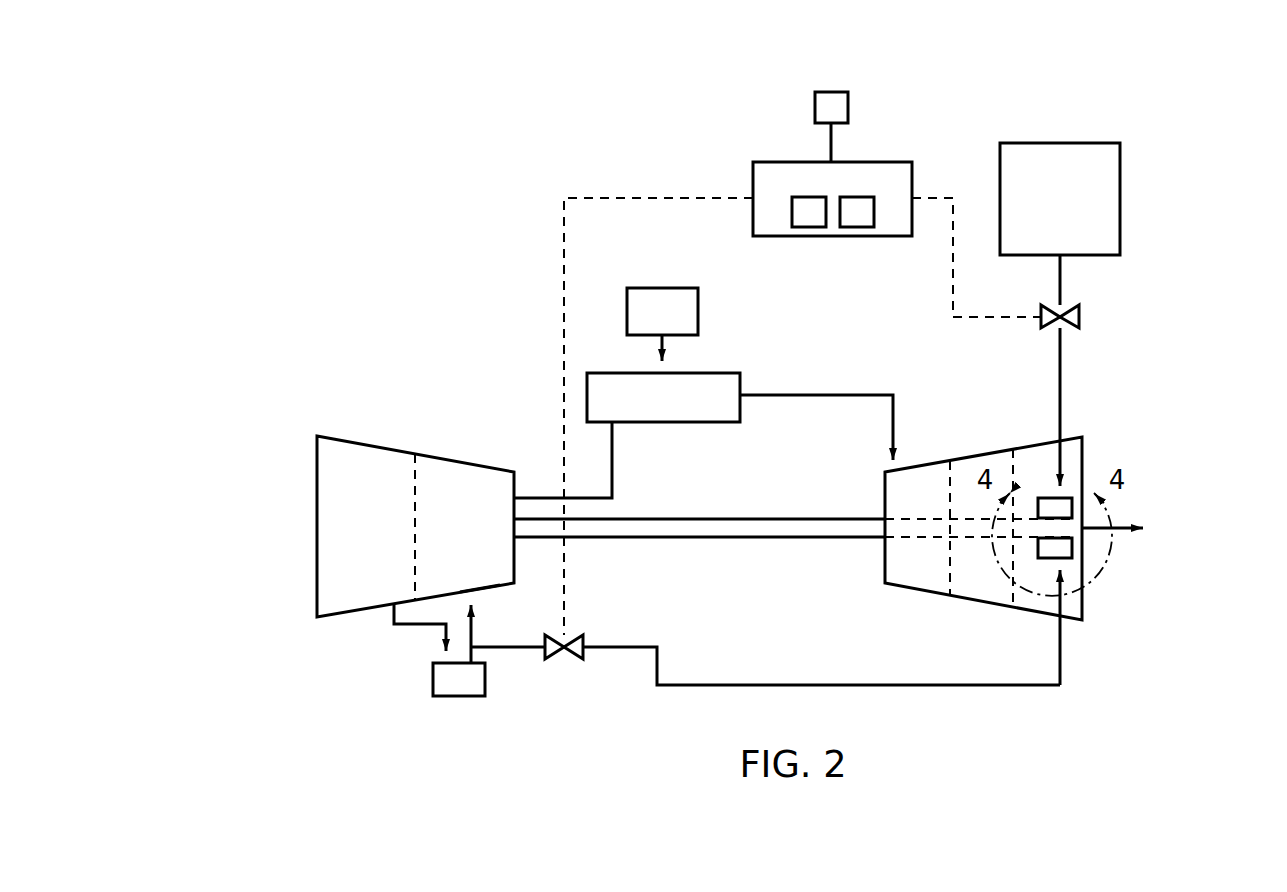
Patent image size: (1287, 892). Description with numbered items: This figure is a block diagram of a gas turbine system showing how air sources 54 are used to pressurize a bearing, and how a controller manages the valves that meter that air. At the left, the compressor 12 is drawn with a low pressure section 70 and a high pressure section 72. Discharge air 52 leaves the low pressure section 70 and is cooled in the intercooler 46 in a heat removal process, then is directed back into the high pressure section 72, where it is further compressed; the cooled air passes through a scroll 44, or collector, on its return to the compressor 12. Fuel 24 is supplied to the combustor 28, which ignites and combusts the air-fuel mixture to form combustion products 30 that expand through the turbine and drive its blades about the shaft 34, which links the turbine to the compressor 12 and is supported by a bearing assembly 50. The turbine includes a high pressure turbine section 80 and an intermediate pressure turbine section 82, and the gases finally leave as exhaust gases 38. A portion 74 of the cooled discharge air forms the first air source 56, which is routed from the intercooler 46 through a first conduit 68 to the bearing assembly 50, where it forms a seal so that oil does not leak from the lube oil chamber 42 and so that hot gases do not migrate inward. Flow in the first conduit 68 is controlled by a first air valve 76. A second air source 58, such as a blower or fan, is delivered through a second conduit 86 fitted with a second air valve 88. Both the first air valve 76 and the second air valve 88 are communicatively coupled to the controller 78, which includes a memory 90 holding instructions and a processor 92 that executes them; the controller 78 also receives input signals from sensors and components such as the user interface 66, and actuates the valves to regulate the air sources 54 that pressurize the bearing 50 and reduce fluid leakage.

The compressor 12 is at (406, 462).
The fuel 24 is at (662, 288).
The combustor 28 is at (722, 373).
The combustion products 30 is at (820, 395).
The shaft 34 is at (690, 516).
The exhaust gases 38 is at (1124, 530).
The lube oil chamber 42 is at (1068, 497).
The scroll 44 is at (484, 598).
The intercooler 46 is at (445, 698).
The bearing assembly 50 is at (1116, 493).
The discharge air 52 is at (437, 632).
The air sources 54 is at (1064, 121).
The first air source 56 is at (319, 681).
The second air source 58 is at (718, 386).
The user interface 66 is at (815, 107).
The first conduit 68 is at (627, 647).
The low pressure section 70 is at (333, 435).
The high pressure section 72 is at (435, 455).
The portion of cooled discharge air 74 is at (508, 636).
The first air valve 76 is at (571, 630).
The controller 78 is at (802, 379).
The high pressure turbine section 80 is at (962, 526).
The intermediate pressure turbine section 82 is at (988, 602).
The second conduit 86 is at (1062, 286).
The second air valve 88 is at (1082, 318).
The memory 90 is at (810, 228).
The processor 92 is at (858, 228).